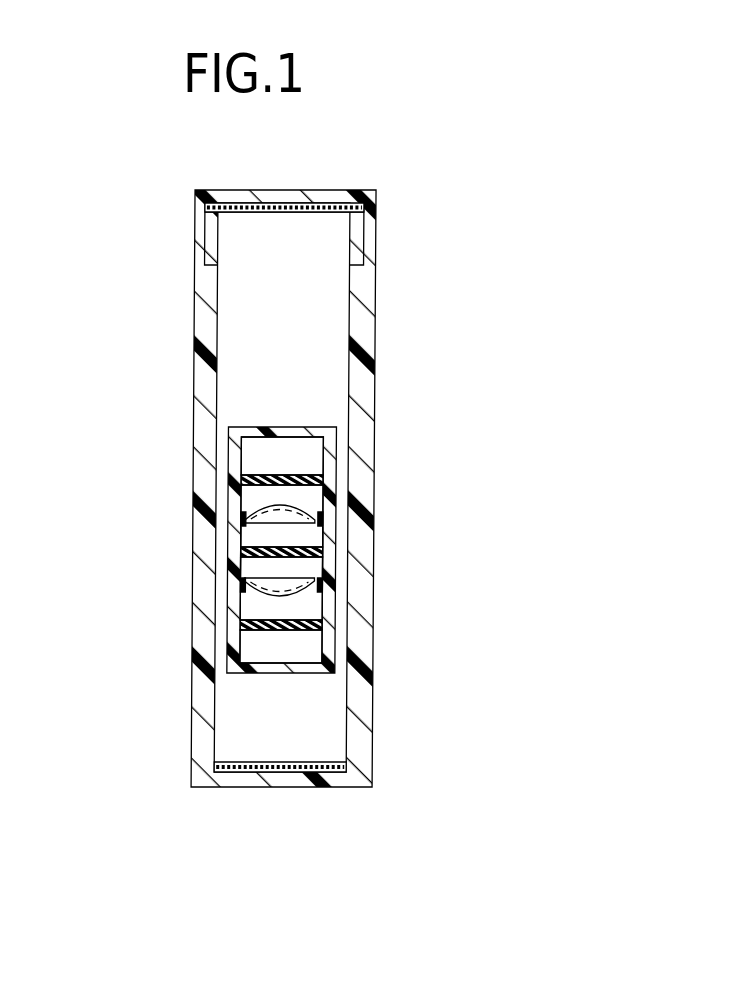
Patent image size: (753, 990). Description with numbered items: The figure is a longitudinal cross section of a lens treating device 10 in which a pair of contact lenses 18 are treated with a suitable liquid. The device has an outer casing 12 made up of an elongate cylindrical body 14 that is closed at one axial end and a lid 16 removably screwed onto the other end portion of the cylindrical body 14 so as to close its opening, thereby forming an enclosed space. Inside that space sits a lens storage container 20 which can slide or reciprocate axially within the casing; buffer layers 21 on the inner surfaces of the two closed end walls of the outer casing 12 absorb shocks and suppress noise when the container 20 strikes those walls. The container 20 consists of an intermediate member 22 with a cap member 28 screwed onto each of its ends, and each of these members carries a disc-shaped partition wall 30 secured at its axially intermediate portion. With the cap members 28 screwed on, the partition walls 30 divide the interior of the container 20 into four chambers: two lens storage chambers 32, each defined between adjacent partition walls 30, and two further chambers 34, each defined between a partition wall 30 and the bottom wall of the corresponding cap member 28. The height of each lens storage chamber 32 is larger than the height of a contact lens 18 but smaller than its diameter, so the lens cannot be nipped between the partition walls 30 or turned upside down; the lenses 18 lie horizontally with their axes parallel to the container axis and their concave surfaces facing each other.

The lens treating device 10 is at (426, 241).
The outer casing 12 is at (117, 225).
The cylindrical body 14 is at (204, 300).
The lid 16 is at (199, 237).
The contact lens 18 is at (302, 513).
The lens storage container 20 is at (118, 490).
The buffer layer 21 is at (323, 205).
The intermediate member 22 is at (237, 543).
The cap member 28 is at (237, 498).
The partition wall 30 is at (299, 480).
The lens storage chamber 32 is at (299, 495).
The chamber 34 is at (259, 455).